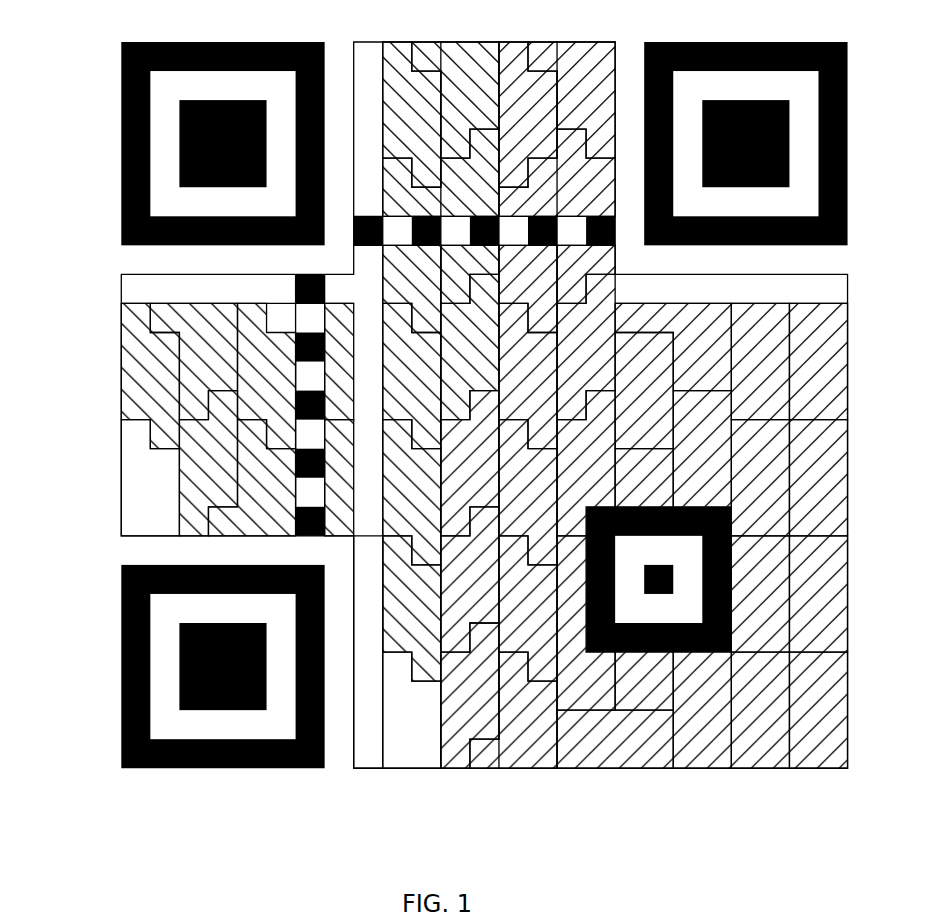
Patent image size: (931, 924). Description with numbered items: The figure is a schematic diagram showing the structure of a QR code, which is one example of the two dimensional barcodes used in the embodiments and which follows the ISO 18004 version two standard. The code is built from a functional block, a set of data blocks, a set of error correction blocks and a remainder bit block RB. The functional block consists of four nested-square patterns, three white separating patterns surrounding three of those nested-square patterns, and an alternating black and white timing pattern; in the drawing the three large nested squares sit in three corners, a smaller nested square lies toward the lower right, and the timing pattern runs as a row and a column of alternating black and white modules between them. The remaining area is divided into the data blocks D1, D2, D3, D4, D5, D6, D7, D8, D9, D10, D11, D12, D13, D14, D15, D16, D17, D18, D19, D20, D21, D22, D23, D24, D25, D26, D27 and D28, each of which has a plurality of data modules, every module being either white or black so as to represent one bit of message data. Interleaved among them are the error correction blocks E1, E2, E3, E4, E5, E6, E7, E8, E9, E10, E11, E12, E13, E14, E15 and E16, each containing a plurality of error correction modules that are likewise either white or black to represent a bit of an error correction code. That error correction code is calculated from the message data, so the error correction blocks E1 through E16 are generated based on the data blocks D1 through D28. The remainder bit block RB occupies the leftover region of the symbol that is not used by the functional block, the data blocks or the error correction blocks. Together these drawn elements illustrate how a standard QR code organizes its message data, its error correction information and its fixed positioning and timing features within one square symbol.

The error correction block E1 is at (470, 346).
The error correction block E2 is at (441, 175).
The error correction block E3 is at (455, 100).
The error correction block E4 is at (412, 114).
The error correction block E5 is at (412, 288).
The error correction block E6 is at (412, 375).
The error correction block E7 is at (412, 492).
The error correction block E8 is at (412, 608).
The error correction block E9 is at (367, 535).
The error correction block E10 is at (350, 478).
The error correction block E11 is at (350, 361).
The error correction block E12 is at (267, 375).
The error correction block E13 is at (251, 478).
The error correction block E14 is at (208, 463).
The error correction block E15 is at (193, 361).
The error correction block E16 is at (150, 375).
The data block D1 is at (818, 710).
The data block D2 is at (818, 594).
The data block D3 is at (818, 478).
The data block D4 is at (818, 361).
The data block D5 is at (760, 361).
The data block D6 is at (760, 478).
The data block D7 is at (760, 594).
The data block D8 is at (760, 710).
The data block D9 is at (702, 710).
The data block D10 is at (702, 449).
The data block D11 is at (673, 346).
The data block D12 is at (644, 391).
The data block D13 is at (644, 579).
The data block D14 is at (615, 739).
The data block D15 is at (586, 623).
The data block D16 is at (586, 463).
The data block D17 is at (586, 346).
The data block D18 is at (557, 172).
The data block D19 is at (571, 100).
The data block D20 is at (528, 114).
The data block D21 is at (528, 288).
The data block D22 is at (528, 375).
The data block D23 is at (528, 492).
The data block D24 is at (528, 608).
The data block D25 is at (513, 710).
The data block D26 is at (470, 695).
The data block D27 is at (470, 579).
The data block D28 is at (470, 463).
The remainder bit block RB is at (145, 482).